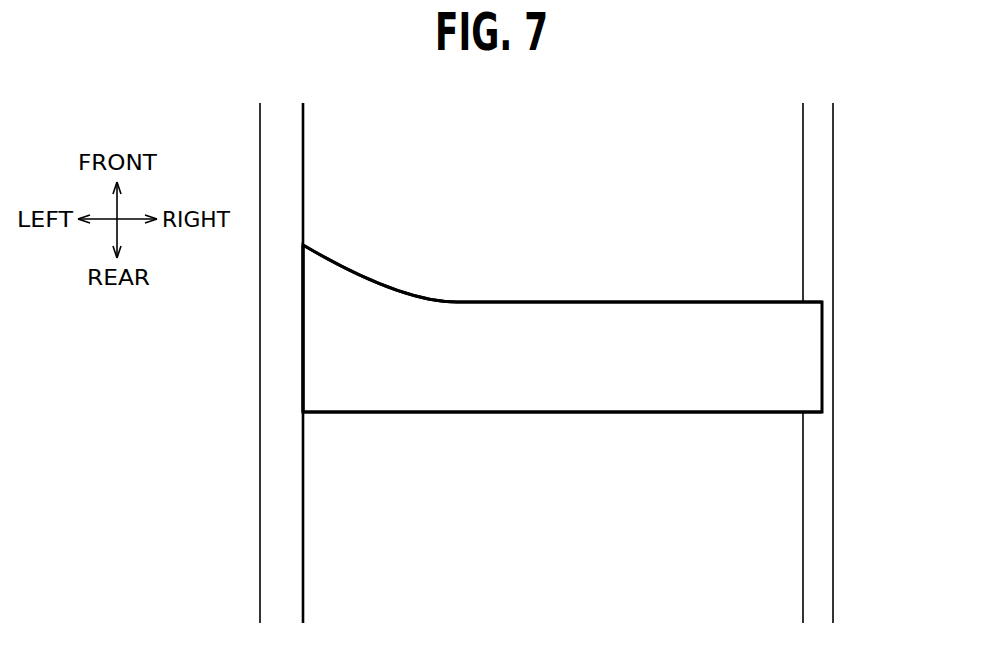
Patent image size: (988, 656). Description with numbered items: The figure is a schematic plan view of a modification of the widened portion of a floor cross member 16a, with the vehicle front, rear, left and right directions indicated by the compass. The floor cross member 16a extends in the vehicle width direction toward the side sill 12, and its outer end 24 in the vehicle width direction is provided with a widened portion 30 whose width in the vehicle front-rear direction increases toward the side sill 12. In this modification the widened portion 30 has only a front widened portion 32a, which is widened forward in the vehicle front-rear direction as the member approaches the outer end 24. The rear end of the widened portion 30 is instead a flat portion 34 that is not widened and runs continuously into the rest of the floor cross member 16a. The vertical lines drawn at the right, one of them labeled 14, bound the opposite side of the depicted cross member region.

The side sill 12 is at (250, 352).
The second member 14 is at (850, 340).
The floor cross member 16a is at (650, 293).
The outer end 24 is at (300, 378).
The widened portion 30 is at (353, 228).
The front widened portion 32a is at (375, 282).
The flat portion 34 is at (388, 415).